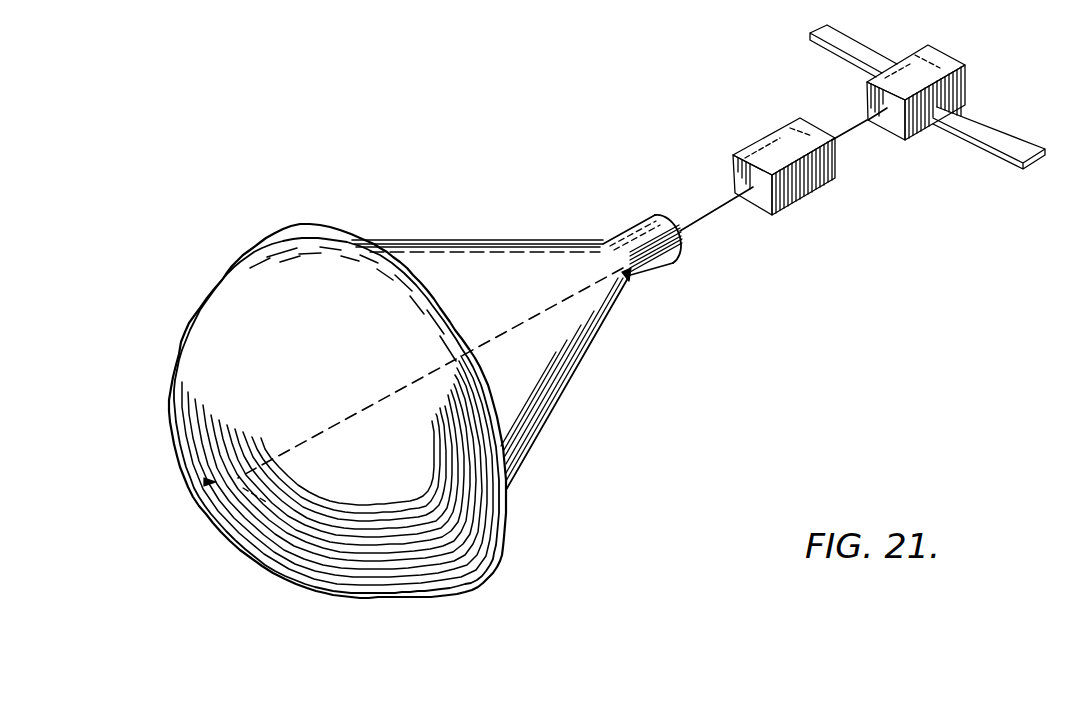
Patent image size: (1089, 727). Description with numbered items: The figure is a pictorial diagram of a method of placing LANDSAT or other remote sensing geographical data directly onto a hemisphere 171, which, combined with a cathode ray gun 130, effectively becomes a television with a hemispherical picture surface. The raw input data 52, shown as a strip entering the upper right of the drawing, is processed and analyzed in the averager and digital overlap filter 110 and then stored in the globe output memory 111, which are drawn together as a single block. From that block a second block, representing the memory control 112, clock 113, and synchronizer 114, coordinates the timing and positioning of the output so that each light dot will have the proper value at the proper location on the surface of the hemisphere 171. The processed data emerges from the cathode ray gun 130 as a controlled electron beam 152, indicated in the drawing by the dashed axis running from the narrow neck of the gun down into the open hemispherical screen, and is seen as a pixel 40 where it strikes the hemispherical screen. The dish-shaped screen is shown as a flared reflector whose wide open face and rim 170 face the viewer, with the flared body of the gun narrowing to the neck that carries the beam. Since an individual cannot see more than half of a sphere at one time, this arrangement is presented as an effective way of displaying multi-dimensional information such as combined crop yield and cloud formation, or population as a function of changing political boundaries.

The pixel 40 is at (205, 482).
The input data 52 is at (983, 113).
The averager and digital overlap filter 110 is at (950, 55).
The globe output memory 111 is at (935, 102).
The memory control 112 is at (815, 193).
The clock 113 is at (814, 194).
The synchronizer 114 is at (814, 186).
The cathode ray gun 130 is at (663, 272).
The controlled electron beam 152 is at (497, 338).
The reflector dish 170 is at (503, 545).
The hemisphere 171 is at (317, 592).